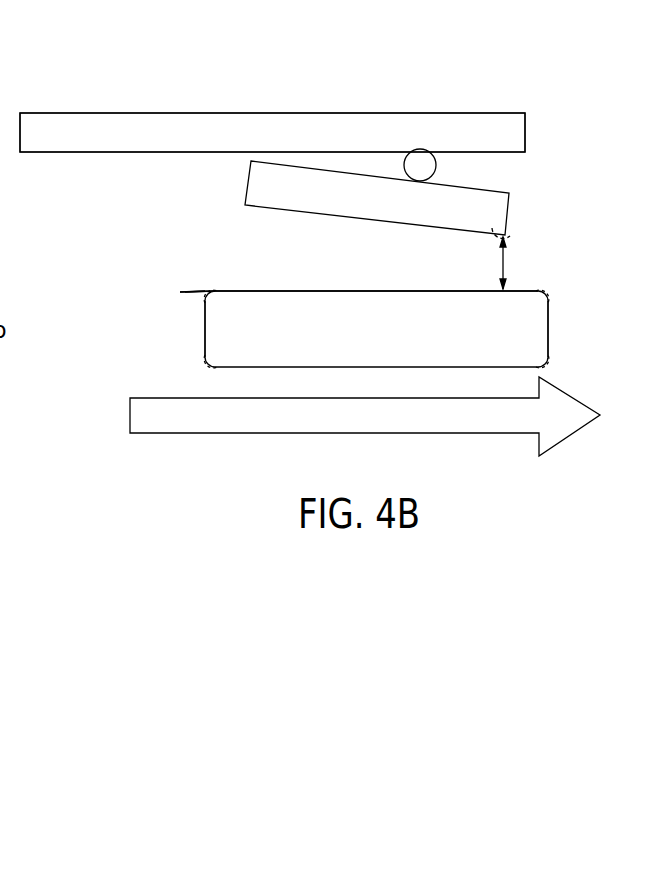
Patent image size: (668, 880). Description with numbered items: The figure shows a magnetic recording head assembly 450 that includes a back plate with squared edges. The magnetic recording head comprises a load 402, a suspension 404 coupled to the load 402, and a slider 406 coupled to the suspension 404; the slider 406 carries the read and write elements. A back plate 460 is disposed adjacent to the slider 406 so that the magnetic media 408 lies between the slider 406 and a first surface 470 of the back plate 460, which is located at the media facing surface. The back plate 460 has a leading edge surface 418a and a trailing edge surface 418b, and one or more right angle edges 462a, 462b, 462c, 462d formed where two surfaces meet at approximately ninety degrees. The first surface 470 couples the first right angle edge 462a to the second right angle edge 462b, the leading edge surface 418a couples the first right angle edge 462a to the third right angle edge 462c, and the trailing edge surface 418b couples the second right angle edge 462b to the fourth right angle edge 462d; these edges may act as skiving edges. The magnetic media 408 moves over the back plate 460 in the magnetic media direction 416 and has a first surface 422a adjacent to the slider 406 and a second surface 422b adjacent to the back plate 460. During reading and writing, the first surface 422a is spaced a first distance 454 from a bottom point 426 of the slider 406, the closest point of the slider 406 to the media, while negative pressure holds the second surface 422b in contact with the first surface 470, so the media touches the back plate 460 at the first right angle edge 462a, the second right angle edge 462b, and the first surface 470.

The magnetic recording head assembly 450 is at (116, 80).
The load 402 is at (290, 146).
The suspension 404 is at (437, 166).
The slider 406 is at (398, 211).
The bottom point 426 is at (510, 234).
The first distance 454 is at (505, 262).
The back plate 460 is at (398, 340).
The first surface 470 is at (325, 292).
The first right angle edge 462a is at (216, 300).
The second right angle edge 462b is at (596, 306).
The third right angle edge 462c is at (212, 360).
The fourth right angle edge 462d is at (541, 362).
The leading edge surface 418a is at (204, 340).
The trailing edge surface 418b is at (549, 325).
The magnetic media 408 is at (184, 292).
The first surface 422a is at (185, 292).
The second surface 422b is at (184, 293).
The magnetic media direction 416 is at (551, 430).